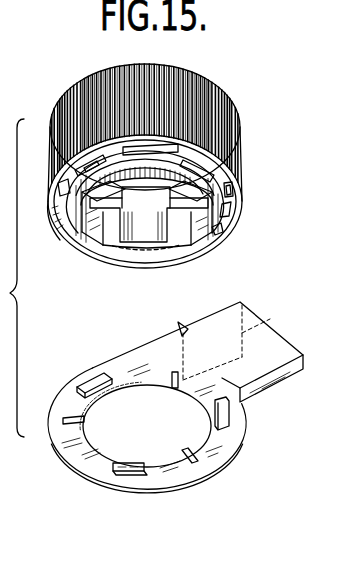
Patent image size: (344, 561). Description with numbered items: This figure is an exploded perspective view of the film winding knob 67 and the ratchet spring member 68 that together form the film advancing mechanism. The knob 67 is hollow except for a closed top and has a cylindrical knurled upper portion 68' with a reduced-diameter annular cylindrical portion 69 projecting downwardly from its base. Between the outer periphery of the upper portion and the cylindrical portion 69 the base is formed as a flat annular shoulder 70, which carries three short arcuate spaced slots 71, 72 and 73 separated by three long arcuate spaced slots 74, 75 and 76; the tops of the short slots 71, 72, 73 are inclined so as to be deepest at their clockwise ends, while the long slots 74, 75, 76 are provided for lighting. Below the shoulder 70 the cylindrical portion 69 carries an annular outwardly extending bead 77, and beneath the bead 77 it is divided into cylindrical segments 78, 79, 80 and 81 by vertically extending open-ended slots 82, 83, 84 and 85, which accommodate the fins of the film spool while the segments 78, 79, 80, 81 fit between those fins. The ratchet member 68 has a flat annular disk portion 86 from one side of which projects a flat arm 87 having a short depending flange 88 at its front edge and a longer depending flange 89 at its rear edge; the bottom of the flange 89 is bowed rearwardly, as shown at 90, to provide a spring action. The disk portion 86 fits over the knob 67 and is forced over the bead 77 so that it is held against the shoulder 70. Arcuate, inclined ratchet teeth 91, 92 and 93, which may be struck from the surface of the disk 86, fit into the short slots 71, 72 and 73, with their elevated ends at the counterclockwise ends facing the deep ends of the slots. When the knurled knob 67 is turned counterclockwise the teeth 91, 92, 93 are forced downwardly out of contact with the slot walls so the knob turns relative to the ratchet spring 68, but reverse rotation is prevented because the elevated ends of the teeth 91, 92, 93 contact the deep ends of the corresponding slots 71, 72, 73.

The winding knob 67 is at (156, 191).
The cylindrical knurled upper portion 68' is at (163, 123).
The ratchet spring member 68 is at (188, 411).
The annular cylindrical portion 69 is at (84, 250).
The flat annular shoulder 70 is at (221, 234).
The short arcuate slot 71 is at (90, 162).
The short arcuate slot 72 is at (233, 217).
The short arcuate slot 73 is at (110, 257).
The long arcuate slot 74 is at (212, 164).
The long arcuate slot 75 is at (214, 243).
The long arcuate slot 76 is at (66, 236).
The annular outwardly extending bead 77 is at (206, 188).
The cylindrical segment 78 is at (86, 192).
The cylindrical segment 79 is at (148, 179).
The cylindrical segment 80 is at (196, 236).
The cylindrical segment 81 is at (153, 250).
The vertically extending open-ended slot 82 is at (96, 200).
The vertically extending open-ended slot 83 is at (232, 192).
The vertically extending open-ended slot 84 is at (173, 248).
The vertically extending open-ended slot 85 is at (103, 248).
The flat annular disk portion 86 is at (185, 475).
The flat arm 87 is at (211, 358).
The short depending flange 88 is at (278, 380).
The long depending flange 89 is at (268, 318).
The bowed bottom of flange 90 is at (182, 352).
The arcuate inclined ratchet tooth 91 is at (92, 378).
The arcuate inclined ratchet tooth 92 is at (132, 470).
The arcuate inclined ratchet tooth 93 is at (229, 420).